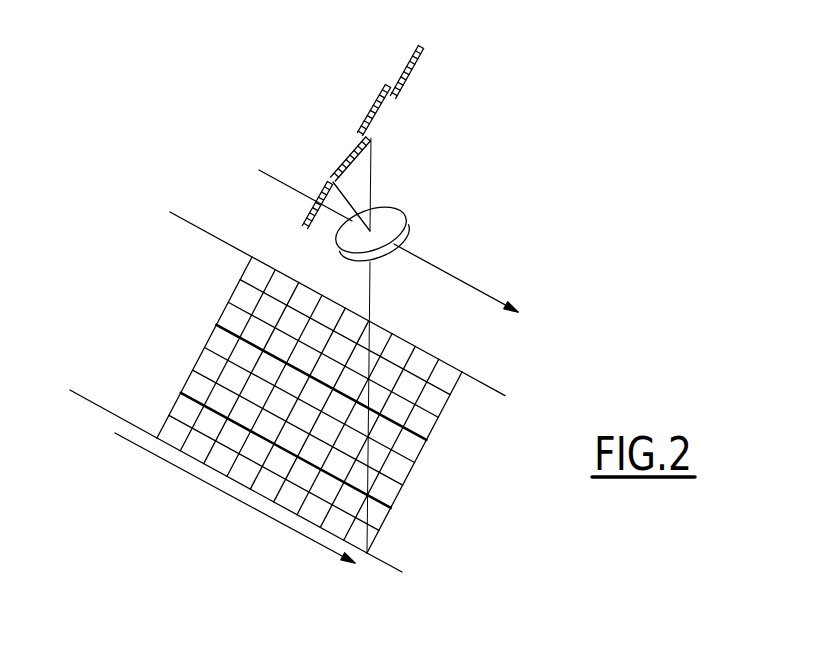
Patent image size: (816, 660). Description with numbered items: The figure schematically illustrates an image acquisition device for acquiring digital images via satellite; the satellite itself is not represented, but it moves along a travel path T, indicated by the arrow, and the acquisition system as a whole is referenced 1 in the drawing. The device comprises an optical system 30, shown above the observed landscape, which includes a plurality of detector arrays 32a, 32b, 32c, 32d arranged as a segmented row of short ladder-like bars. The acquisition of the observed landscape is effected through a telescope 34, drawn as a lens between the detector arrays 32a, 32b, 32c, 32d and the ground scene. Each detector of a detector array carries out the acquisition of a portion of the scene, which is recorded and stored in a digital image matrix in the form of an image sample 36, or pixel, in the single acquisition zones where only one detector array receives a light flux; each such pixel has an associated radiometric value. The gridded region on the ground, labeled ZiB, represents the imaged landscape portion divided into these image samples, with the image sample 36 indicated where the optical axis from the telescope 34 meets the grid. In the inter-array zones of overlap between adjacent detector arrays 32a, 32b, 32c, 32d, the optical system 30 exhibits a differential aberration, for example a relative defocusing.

The system / device 1 is at (458, 530).
The optical system 30 is at (314, 131).
The detector array 32a is at (348, 158).
The detector array 32b is at (307, 218).
The detector array 32c is at (372, 108).
The detector array 32d is at (404, 62).
The telescope 34 is at (392, 213).
The image sample 36 is at (372, 535).
The travel path T is at (487, 295).
The line image region (grid) ZiB is at (412, 473).